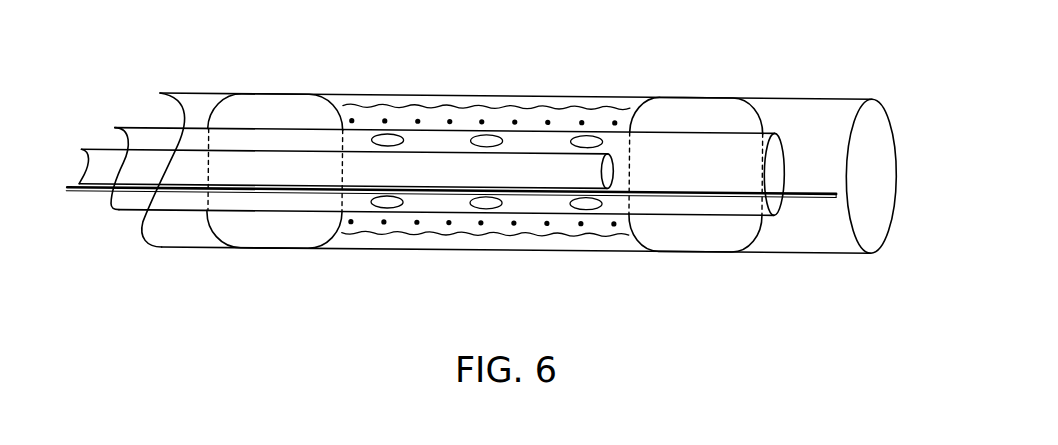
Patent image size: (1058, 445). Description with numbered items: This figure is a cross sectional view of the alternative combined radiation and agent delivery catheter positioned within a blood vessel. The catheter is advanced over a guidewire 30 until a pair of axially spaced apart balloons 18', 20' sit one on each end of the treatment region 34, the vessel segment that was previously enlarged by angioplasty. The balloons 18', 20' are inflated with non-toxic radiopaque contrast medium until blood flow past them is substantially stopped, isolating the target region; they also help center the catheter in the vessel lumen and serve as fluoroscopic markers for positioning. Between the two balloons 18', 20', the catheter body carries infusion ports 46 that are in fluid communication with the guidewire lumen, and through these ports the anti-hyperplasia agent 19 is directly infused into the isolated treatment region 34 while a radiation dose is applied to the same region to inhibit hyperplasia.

The balloon 18' is at (705, 156).
The balloon 20' is at (281, 151).
The anti-hyperplasia agent 19 is at (482, 119).
The infusion port 46 is at (392, 134).
The guidewire 30 is at (792, 196).
The treatment region 34 is at (650, 254).